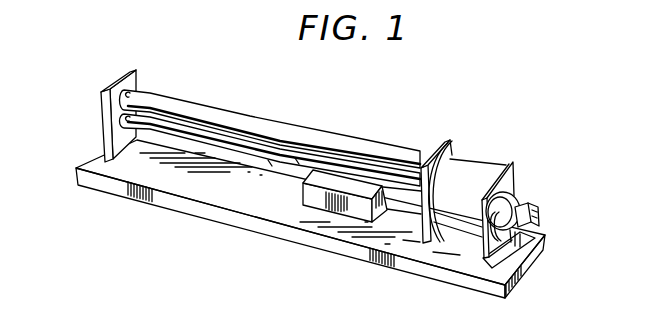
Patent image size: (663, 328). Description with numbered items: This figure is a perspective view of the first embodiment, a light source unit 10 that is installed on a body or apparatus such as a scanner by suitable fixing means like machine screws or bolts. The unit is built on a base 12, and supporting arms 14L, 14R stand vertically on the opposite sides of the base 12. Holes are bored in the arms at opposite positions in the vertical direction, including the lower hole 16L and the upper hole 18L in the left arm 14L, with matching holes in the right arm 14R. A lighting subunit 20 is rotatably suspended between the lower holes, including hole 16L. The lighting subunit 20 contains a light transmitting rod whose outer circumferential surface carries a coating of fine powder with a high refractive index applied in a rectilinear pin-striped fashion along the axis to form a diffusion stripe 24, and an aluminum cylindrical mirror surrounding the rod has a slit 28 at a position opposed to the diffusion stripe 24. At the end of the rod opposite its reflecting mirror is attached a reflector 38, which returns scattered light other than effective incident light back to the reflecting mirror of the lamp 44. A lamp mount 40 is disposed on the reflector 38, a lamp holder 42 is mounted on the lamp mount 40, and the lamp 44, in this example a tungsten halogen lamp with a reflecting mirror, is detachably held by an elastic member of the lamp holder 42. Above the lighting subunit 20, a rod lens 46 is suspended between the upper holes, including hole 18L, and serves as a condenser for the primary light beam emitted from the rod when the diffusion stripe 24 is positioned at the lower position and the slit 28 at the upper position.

The light source unit 10 is at (333, 127).
The base 12 is at (157, 177).
The supporting arm 14L is at (128, 92).
The supporting arm 14R is at (438, 142).
The hole 16L is at (124, 119).
The hole 18L is at (118, 84).
The lighting subunit 20 is at (247, 150).
The diffusion stripe 24 is at (270, 165).
The slit 28 is at (297, 162).
The reflector 38 is at (420, 218).
The lamp mount 40 is at (472, 175).
The lamp holder 42 is at (486, 265).
The lamp 44 is at (510, 197).
The rod lens 46 is at (262, 124).